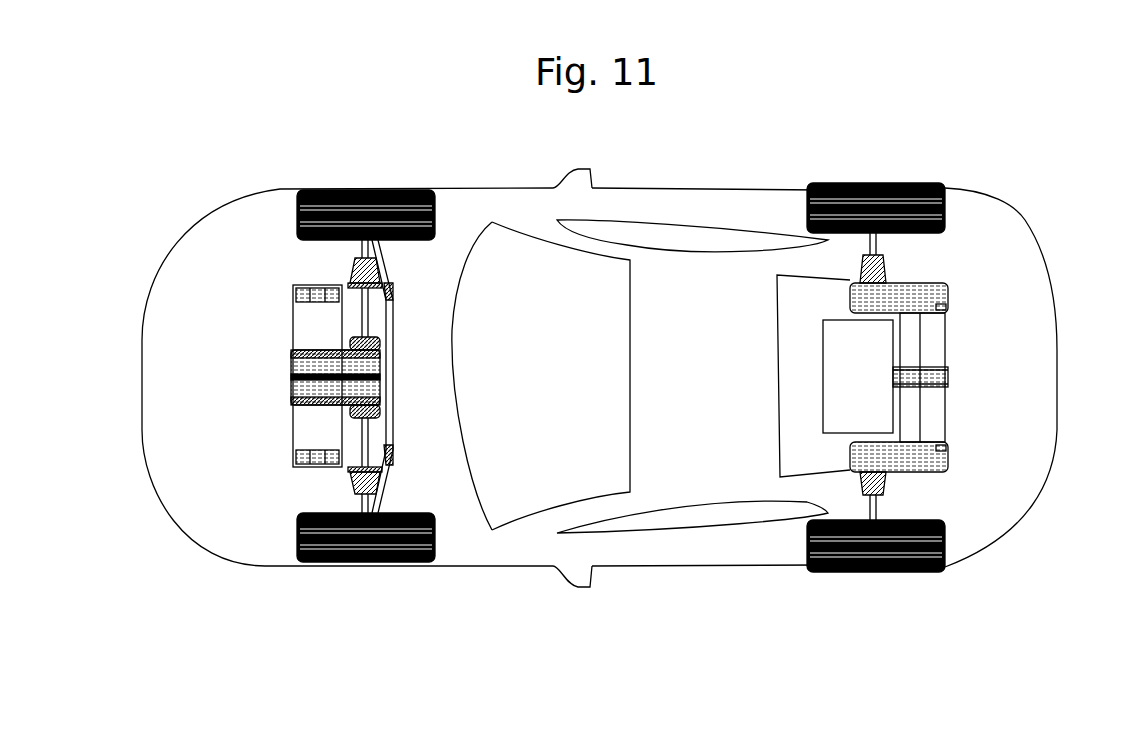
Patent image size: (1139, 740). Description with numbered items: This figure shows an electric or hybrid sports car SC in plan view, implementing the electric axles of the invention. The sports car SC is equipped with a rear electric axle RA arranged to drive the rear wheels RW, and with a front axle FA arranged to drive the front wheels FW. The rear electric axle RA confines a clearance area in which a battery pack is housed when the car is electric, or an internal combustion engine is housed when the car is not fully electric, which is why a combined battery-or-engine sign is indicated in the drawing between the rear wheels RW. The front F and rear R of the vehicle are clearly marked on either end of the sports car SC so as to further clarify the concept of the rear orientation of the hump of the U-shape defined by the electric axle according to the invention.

The front of the vehicle F is at (138, 290).
The front wheels FW is at (362, 190).
The front axle FA is at (260, 392).
The sports car SC is at (650, 197).
The rear wheels RW is at (863, 182).
The rear electric axle RA is at (955, 443).
The rear of the vehicle R is at (1068, 430).